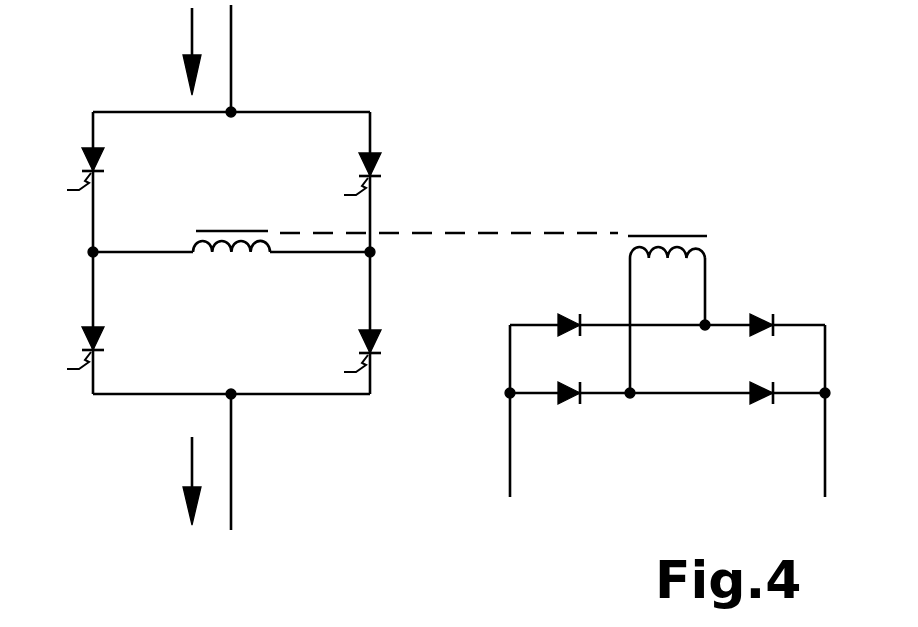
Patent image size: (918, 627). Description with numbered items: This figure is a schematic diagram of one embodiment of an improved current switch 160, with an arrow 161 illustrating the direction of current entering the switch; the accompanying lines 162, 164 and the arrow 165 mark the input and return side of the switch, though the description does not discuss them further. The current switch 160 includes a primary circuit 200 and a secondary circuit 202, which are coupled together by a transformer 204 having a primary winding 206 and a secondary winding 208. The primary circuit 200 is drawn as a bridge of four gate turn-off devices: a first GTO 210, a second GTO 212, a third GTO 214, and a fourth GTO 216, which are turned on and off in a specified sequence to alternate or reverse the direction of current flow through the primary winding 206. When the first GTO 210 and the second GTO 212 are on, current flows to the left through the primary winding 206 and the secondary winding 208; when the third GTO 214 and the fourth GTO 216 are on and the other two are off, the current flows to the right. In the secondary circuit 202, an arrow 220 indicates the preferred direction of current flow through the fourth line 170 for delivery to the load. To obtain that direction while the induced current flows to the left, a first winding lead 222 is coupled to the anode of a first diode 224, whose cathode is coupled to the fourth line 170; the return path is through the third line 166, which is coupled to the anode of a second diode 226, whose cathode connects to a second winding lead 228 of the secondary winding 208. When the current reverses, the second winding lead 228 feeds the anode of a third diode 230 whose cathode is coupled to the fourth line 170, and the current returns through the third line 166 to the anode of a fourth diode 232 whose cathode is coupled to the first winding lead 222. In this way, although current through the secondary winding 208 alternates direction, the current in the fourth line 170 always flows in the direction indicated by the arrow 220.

The current switch 160 is at (592, 62).
The arrow 161 is at (190, 33).
The input line 162 is at (233, 47).
The return line 164 is at (233, 470).
The return current arrow 165 is at (190, 468).
The third line 166 is at (508, 462).
The fourth line 170 is at (822, 470).
The primary circuit 200 is at (42, 452).
The secondary circuit 202 is at (786, 218).
The transformer 204 is at (642, 258).
The primary winding 206 is at (229, 228).
The secondary winding 208 is at (658, 232).
The first gate turn-off device 210 is at (373, 152).
The second GTO 212 is at (88, 328).
The third GTO 214 is at (88, 150).
The fourth GTO 216 is at (375, 330).
The arrow 220 is at (853, 340).
The first winding lead 222 is at (637, 352).
The first diode 224 is at (752, 400).
The second diode 226 is at (566, 318).
The second winding lead 228 is at (707, 292).
The third diode 230 is at (752, 335).
The fourth diode 232 is at (562, 400).